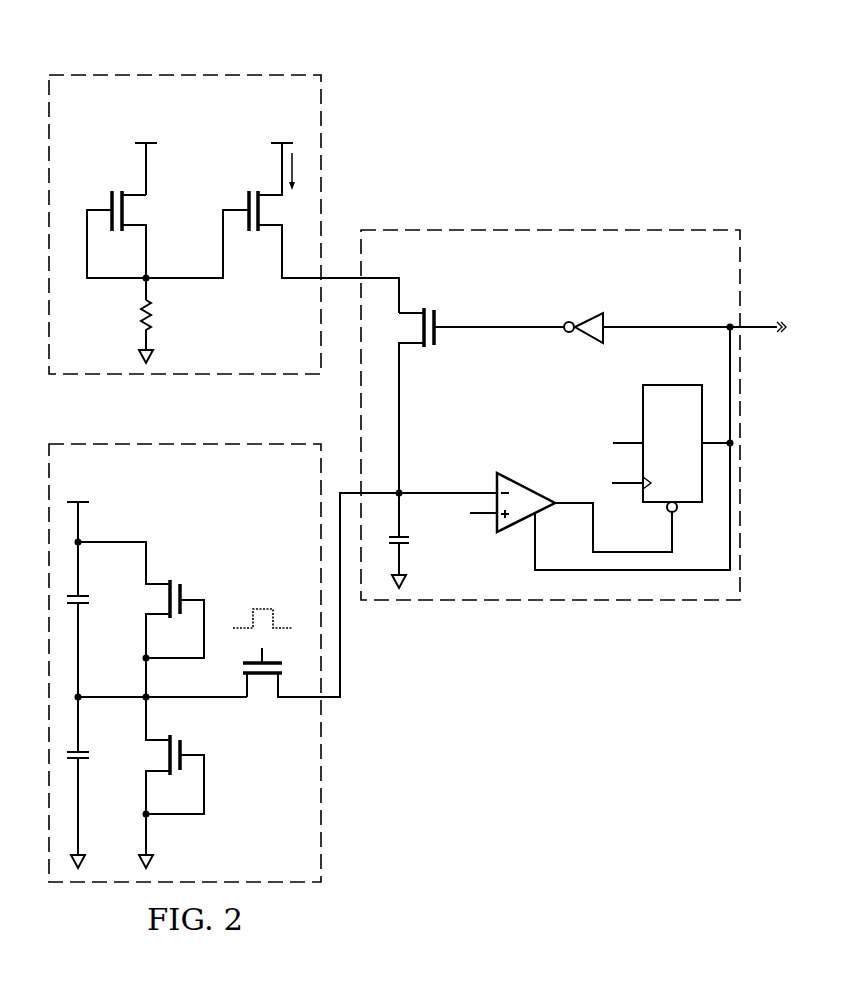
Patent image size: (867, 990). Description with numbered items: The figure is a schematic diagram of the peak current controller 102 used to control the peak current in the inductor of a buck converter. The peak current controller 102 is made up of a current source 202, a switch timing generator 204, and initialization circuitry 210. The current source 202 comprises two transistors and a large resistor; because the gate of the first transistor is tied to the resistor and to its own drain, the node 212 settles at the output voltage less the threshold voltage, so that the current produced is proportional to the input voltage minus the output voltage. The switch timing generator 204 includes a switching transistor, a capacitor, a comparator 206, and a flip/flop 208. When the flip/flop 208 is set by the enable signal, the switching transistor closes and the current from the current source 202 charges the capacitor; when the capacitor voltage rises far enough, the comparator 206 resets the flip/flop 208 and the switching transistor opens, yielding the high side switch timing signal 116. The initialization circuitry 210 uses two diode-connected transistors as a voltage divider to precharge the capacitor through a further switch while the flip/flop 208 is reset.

The peak current controller 102 is at (660, 88).
The current source 202 is at (122, 70).
The switch timing generator 204 is at (648, 224).
The comparator 206 is at (525, 485).
The flip/flop 208 is at (683, 385).
The initialization circuitry 210 is at (145, 438).
The node 212 is at (142, 285).
The high side switch timing signal 116 is at (760, 325).